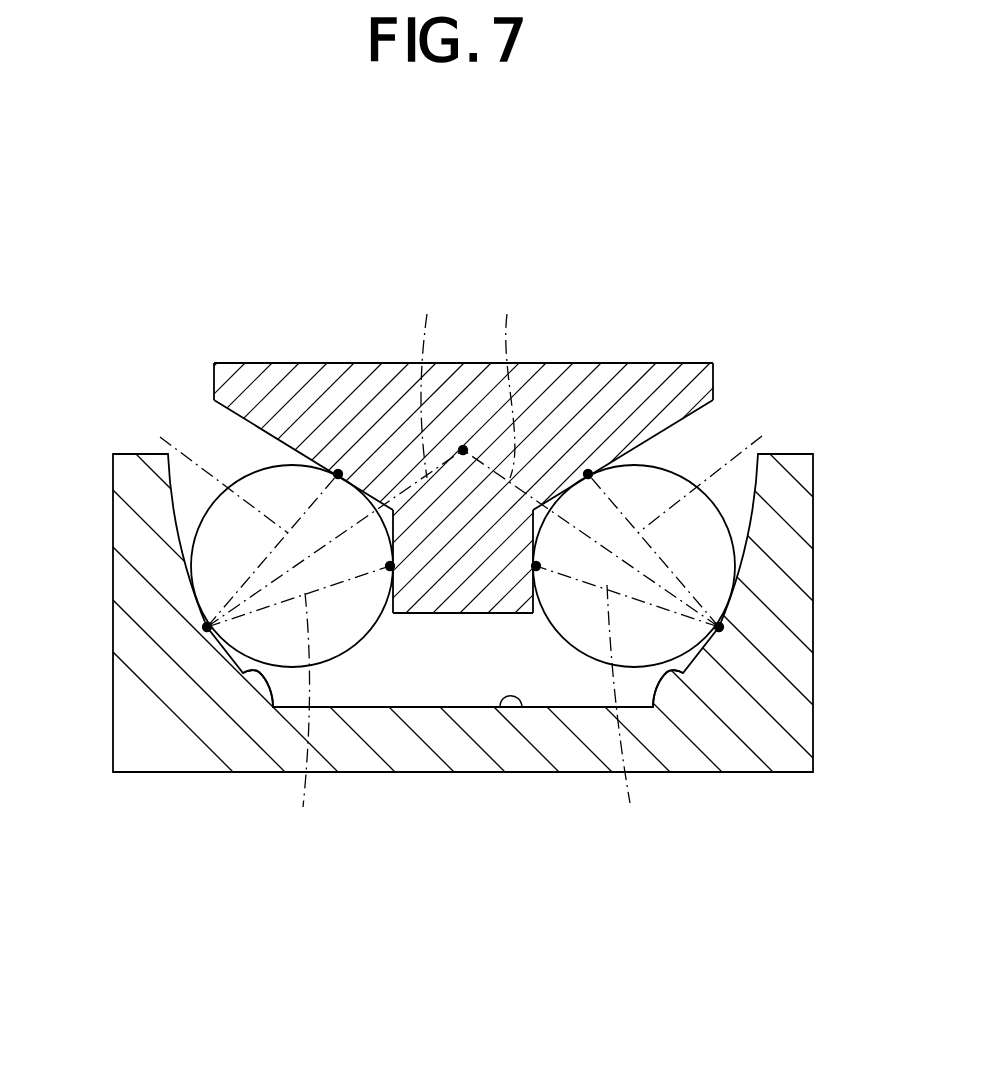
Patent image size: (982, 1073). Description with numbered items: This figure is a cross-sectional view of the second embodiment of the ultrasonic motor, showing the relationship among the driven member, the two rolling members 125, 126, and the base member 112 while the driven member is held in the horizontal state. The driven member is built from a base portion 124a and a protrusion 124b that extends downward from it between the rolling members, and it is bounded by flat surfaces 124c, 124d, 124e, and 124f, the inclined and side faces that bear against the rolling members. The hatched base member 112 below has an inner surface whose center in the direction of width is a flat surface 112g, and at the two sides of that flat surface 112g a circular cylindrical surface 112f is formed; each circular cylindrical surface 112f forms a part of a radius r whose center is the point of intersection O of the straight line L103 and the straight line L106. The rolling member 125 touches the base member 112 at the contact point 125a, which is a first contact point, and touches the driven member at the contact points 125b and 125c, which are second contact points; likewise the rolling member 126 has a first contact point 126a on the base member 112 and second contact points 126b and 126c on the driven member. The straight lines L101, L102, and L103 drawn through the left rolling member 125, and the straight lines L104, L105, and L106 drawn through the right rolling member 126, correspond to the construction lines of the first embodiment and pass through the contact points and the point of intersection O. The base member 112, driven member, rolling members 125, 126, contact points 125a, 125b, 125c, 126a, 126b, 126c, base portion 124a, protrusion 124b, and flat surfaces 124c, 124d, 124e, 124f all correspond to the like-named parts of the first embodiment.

The base member 112 is at (795, 470).
The circular cylindrical surface 112f is at (265, 690).
The flat surface 112g is at (500, 707).
The base portion 124a is at (240, 377).
The protrusion 124b is at (460, 570).
The flat surface 124c is at (222, 406).
The flat surface 124d is at (382, 510).
The flat surface 124e is at (675, 432).
The flat surface 124f is at (547, 512).
The rolling member 125 is at (222, 530).
The contact point 125a is at (207, 627).
The contact point 125b is at (338, 472).
The contact point 125c is at (388, 565).
The rolling member 126 is at (700, 535).
The contact point 126a is at (719, 627).
The contact point 126b is at (588, 473).
The contact point 126c is at (537, 566).
The point of intersection O is at (465, 431).
The straight line L101 is at (204, 467).
The straight line L102 is at (296, 719).
The straight line L103 is at (423, 380).
The straight line L104 is at (724, 467).
The straight line L105 is at (639, 715).
The straight line L106 is at (500, 380).